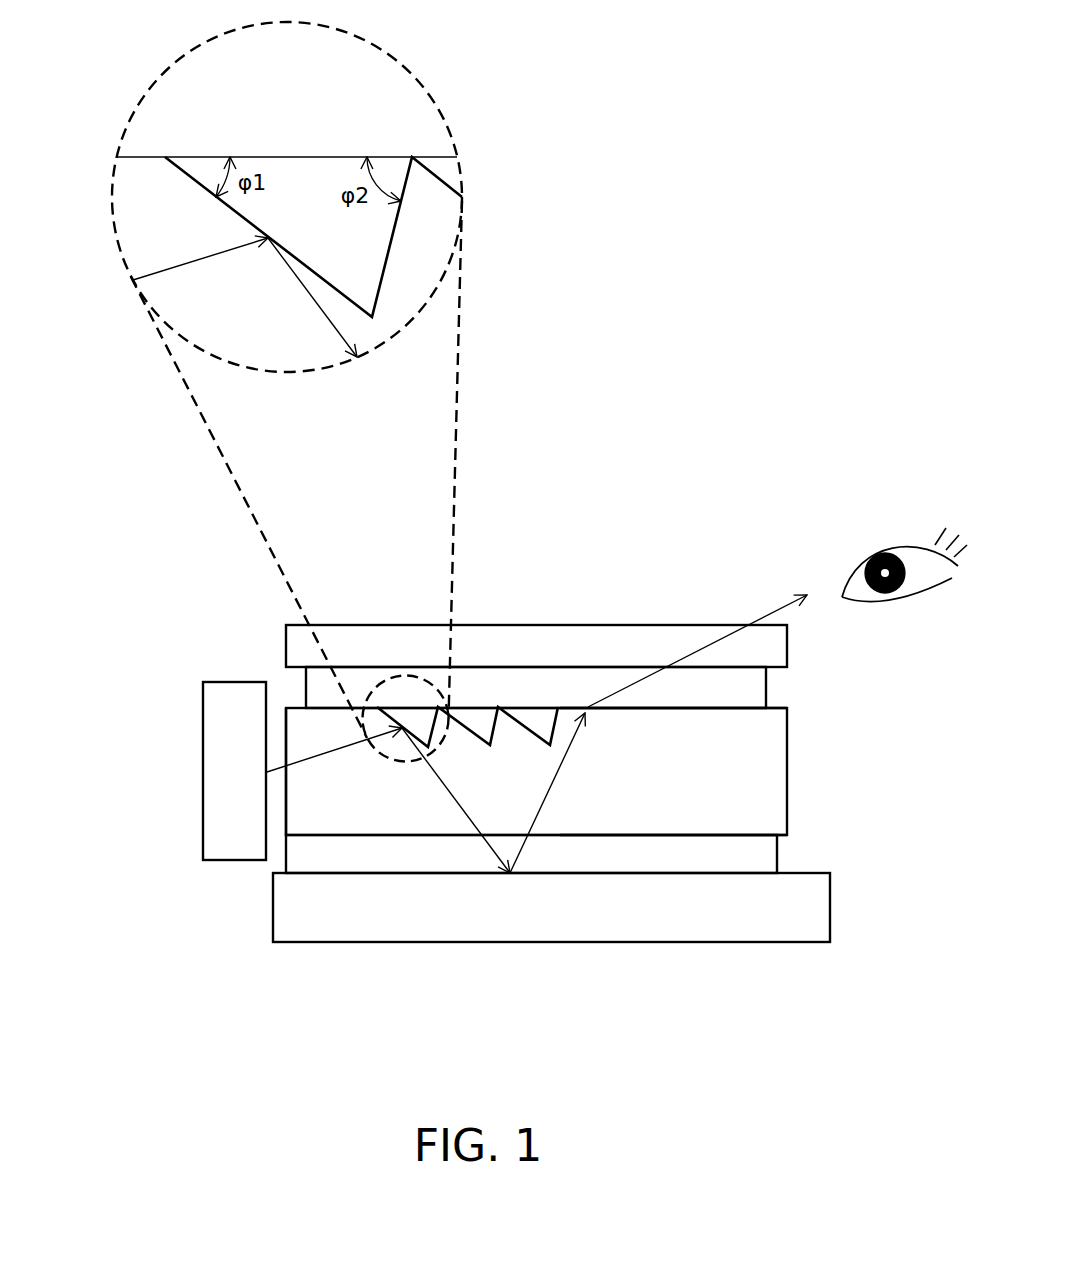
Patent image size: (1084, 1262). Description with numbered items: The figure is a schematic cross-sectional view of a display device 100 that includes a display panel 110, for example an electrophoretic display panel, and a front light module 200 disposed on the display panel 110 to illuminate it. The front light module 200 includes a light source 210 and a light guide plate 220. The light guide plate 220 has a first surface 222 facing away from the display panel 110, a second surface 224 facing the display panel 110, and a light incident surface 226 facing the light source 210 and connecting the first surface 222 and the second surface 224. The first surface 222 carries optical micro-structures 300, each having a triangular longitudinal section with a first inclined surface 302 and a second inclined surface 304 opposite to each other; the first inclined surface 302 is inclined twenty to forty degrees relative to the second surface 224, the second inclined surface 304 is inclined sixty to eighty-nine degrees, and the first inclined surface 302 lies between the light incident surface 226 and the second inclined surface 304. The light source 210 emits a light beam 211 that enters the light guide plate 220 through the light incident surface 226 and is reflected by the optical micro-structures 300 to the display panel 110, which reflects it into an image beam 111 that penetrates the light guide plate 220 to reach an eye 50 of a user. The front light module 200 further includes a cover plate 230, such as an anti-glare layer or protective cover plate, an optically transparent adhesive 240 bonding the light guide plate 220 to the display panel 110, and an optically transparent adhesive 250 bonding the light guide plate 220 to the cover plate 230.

The eye 50 is at (889, 545).
The display device 100 is at (836, 1052).
The display panel 110 is at (802, 910).
The image beam 111 is at (548, 798).
The front light module 200 is at (810, 735).
The light source 210 is at (233, 710).
The light beam 211 is at (310, 758).
The light guide plate 220 is at (747, 778).
The first surface 222 is at (712, 706).
The second surface 224 is at (712, 836).
The light incident surface 226 is at (285, 802).
The cover plate 230 is at (747, 648).
The optically transparent adhesive 240 is at (747, 857).
The optically transparent adhesive 250 is at (747, 690).
The optical micro-structure 300 is at (541, 735).
The first inclined surface 302 is at (532, 736).
The second inclined surface 304 is at (556, 733).